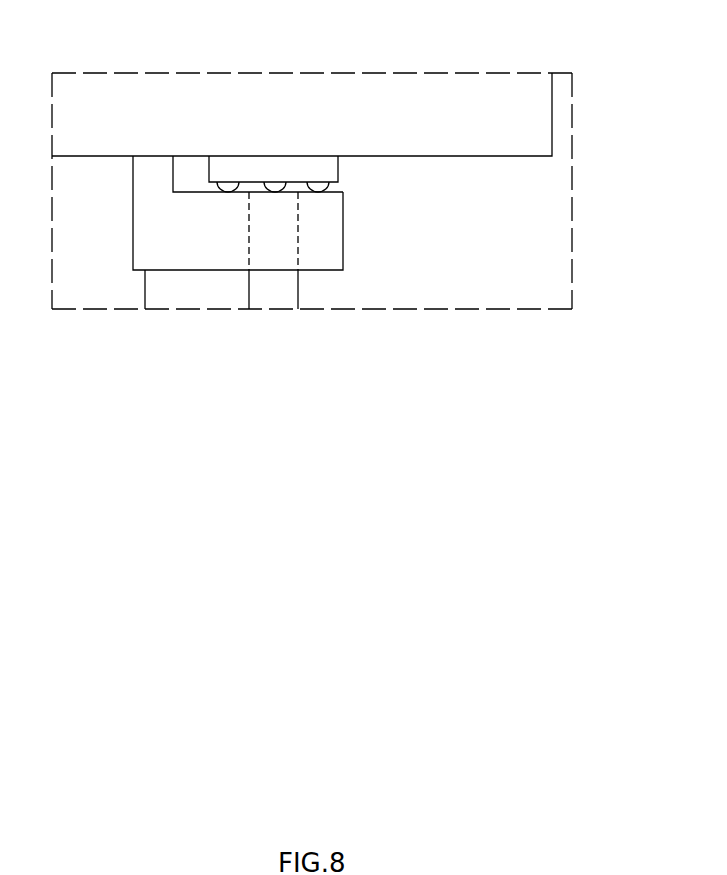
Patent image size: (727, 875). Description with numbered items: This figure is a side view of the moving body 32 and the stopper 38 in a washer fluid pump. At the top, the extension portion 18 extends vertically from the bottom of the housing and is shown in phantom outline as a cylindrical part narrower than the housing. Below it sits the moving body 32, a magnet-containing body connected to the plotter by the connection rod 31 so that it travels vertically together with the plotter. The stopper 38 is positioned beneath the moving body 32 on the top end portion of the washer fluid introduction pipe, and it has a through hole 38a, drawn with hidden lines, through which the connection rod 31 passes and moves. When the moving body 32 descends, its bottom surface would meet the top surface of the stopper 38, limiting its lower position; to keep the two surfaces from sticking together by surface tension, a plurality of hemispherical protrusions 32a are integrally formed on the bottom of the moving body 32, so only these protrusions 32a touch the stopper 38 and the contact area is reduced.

The extension portion 18 is at (534, 116).
The connection rod 31 is at (255, 289).
The moving body 32 is at (333, 168).
The protrusions 32a is at (229, 184).
The stopper 38 is at (332, 230).
The through hole 38a is at (298, 257).